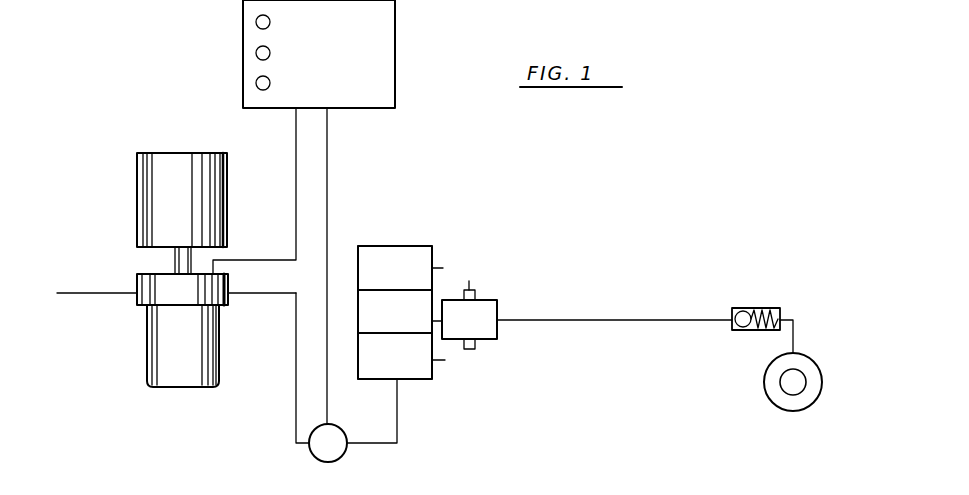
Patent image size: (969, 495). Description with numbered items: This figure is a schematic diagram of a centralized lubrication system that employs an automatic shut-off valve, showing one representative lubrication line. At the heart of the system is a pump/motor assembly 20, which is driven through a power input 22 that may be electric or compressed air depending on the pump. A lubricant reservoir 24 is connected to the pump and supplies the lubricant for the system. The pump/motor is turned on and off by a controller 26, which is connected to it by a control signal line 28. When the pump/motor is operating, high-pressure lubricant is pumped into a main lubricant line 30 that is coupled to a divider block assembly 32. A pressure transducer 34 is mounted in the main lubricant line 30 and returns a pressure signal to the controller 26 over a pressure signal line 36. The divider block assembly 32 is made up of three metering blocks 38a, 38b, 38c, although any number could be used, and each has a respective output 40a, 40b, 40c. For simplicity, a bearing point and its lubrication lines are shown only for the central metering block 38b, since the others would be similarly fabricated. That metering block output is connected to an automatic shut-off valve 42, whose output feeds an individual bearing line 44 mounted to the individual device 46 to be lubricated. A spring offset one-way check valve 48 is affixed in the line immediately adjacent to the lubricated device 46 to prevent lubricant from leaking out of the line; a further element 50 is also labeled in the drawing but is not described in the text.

The sensor body 20 is at (147, 348).
The lead wire 22 is at (110, 292).
The cylindrical housing 24 is at (175, 152).
The control unit 26 is at (243, 37).
The signal line 28 is at (296, 135).
The conduit line 30 is at (296, 386).
The valve block 32 is at (433, 246).
The pump 34 is at (323, 460).
The supply line 36 is at (327, 141).
The valve section a 38a is at (412, 385).
The valve section b 38b is at (428, 292).
The valve section c 38c is at (397, 246).
The port a 40a is at (445, 362).
The port b 40b is at (440, 321).
The port c 40c is at (440, 268).
The control valve 42 is at (500, 340).
The conduit 44 is at (612, 320).
The actuator 46 is at (822, 368).
The check valve 48 is at (757, 308).
The downstream component 50 is at (820, 494).